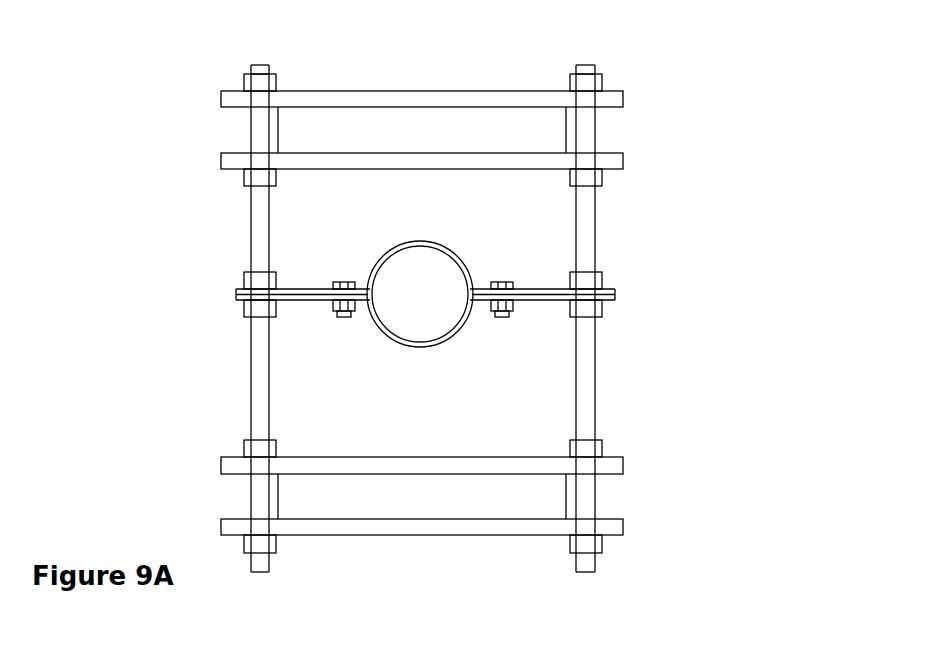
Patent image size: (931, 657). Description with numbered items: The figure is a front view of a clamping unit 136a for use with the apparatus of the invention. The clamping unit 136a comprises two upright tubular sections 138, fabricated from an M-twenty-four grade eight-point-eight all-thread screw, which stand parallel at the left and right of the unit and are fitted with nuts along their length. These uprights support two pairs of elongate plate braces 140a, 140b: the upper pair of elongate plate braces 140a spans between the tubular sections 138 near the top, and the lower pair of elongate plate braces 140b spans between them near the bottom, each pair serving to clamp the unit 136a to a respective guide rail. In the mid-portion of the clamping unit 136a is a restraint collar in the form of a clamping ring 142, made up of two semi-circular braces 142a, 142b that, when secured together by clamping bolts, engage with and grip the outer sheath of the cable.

The clamping unit 136a is at (688, 59).
The upright tubular section 138 is at (266, 390).
The elongate plate braces 140a is at (623, 107).
The elongate plate braces 140b is at (623, 474).
The clamping ring 142 is at (452, 242).
The semi-circular brace 142a is at (618, 289).
The semi-circular brace 142b is at (618, 300).